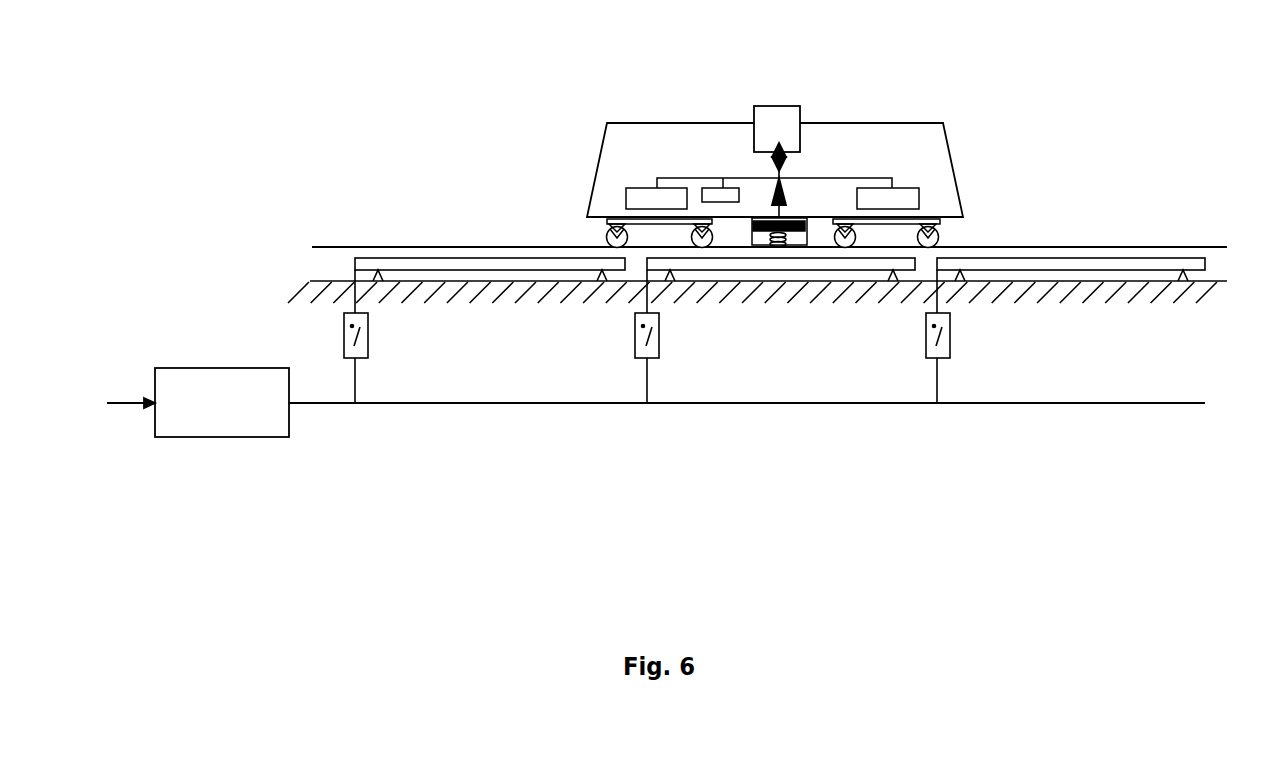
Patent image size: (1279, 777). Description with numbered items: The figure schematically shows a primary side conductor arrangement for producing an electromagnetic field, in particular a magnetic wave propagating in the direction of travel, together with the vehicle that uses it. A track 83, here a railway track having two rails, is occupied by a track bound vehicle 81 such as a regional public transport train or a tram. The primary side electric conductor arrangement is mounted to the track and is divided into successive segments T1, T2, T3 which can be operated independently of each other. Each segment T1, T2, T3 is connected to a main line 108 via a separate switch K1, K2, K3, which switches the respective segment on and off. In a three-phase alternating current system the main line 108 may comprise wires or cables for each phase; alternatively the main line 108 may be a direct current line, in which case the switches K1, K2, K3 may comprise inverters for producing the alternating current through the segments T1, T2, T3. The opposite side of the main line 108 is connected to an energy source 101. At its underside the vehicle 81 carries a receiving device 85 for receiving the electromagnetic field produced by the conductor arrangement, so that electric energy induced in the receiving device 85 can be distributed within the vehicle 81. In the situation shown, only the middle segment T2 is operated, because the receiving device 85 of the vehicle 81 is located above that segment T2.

The track bound vehicle 81 is at (950, 148).
The track 83 is at (348, 245).
The receiving device 85 is at (757, 218).
The energy source 101 is at (242, 437).
The main line 108 is at (1055, 405).
The segment T1 is at (468, 262).
The segment T2 is at (905, 262).
The segment T3 is at (1115, 263).
The switch K1 is at (377, 328).
The switch K2 is at (660, 329).
The switch K3 is at (952, 330).